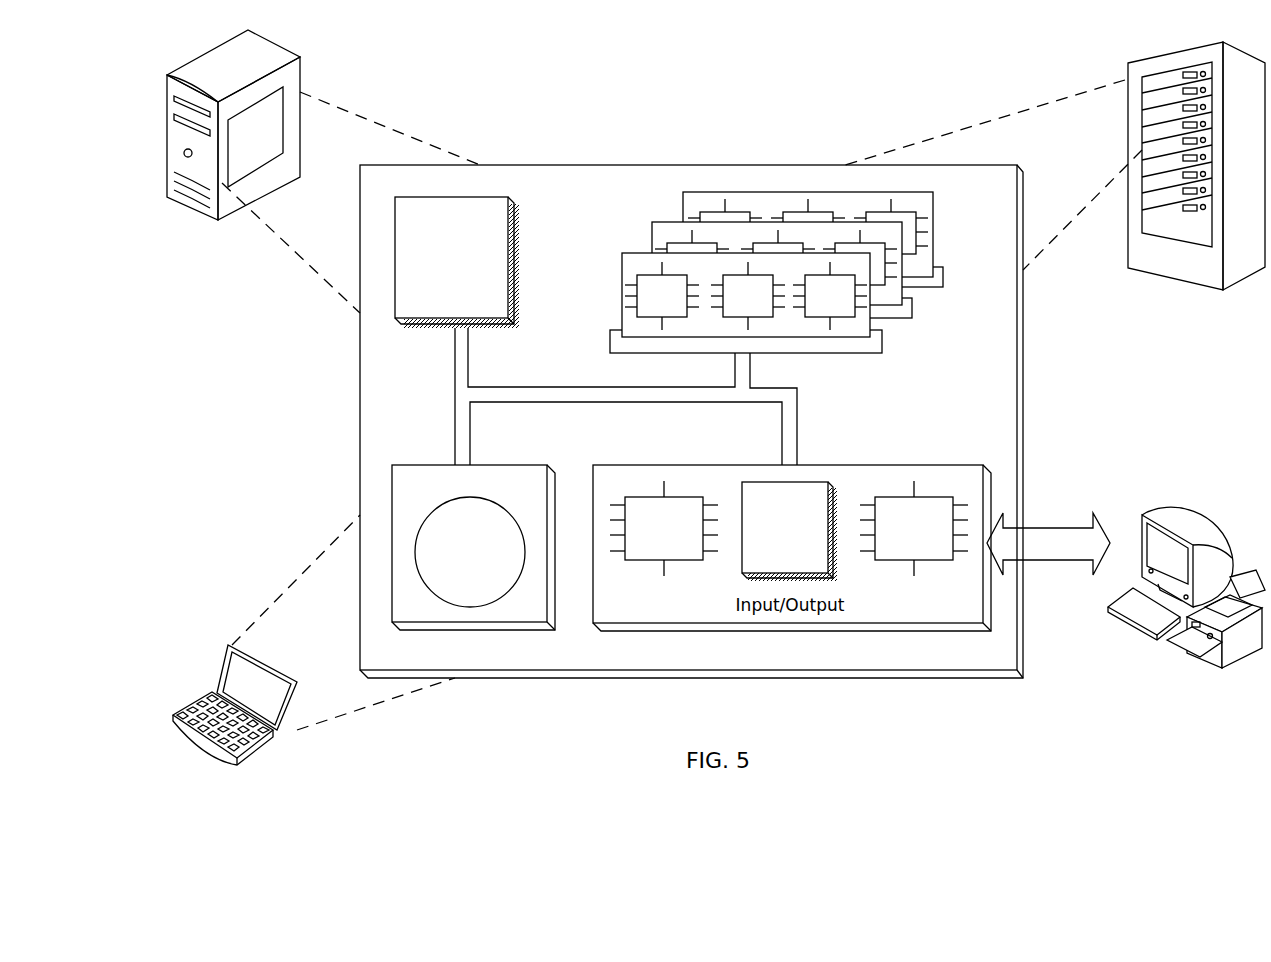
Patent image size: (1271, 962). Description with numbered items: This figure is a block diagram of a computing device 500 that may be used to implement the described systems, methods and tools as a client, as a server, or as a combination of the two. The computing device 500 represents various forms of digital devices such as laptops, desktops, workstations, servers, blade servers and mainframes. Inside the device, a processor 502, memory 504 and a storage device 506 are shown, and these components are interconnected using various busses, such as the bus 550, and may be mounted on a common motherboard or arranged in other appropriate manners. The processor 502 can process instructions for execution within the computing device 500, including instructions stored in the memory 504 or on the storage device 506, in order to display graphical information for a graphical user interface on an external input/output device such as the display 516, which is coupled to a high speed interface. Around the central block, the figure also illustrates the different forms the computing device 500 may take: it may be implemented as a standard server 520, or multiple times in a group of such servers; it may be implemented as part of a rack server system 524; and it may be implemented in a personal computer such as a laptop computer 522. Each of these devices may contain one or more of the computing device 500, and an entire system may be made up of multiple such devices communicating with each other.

The computing device 500 is at (530, 49).
The processor 502 is at (457, 262).
The memory 504 is at (941, 320).
The storage device 506 is at (473, 547).
The display 516 is at (1142, 517).
The standard server 520 is at (168, 77).
The laptop computer 522 is at (187, 708).
The rack server system 524 is at (1128, 64).
The bus 550 is at (621, 403).